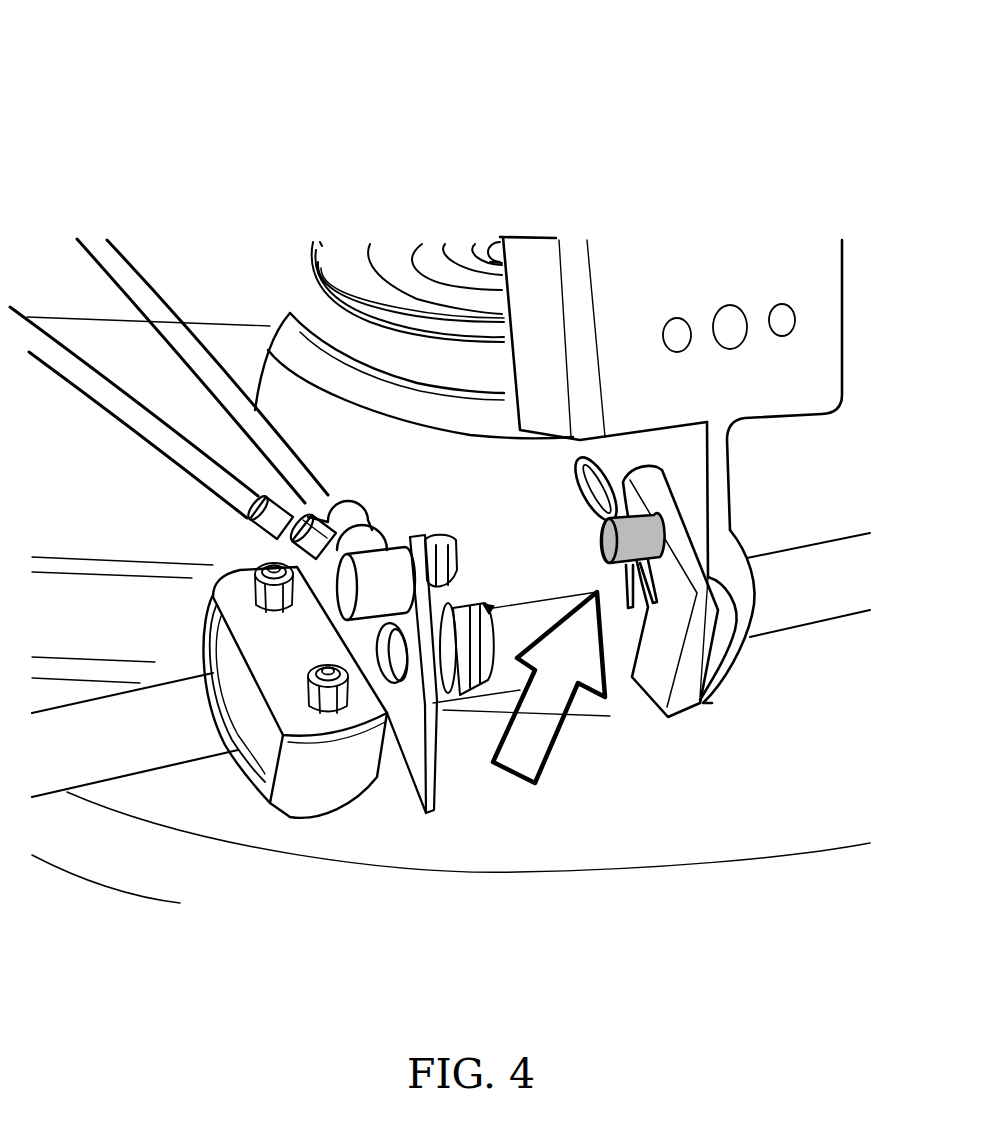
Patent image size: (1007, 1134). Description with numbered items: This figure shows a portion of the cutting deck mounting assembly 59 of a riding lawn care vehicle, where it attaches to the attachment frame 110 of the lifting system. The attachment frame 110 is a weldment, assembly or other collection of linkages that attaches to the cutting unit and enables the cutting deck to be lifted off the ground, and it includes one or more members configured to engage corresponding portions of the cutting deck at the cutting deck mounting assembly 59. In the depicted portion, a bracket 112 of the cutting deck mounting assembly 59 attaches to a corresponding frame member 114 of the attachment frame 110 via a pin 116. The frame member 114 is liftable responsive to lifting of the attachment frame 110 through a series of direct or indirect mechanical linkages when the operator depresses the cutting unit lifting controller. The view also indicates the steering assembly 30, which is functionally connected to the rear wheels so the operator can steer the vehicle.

The steering assembly 30 is at (292, 63).
The attachment frame 110 is at (457, 453).
The bracket 112 is at (667, 707).
The frame member 114 is at (717, 470).
The pin 116 is at (645, 545).
The cutting deck mounting assembly 59 is at (545, 699).